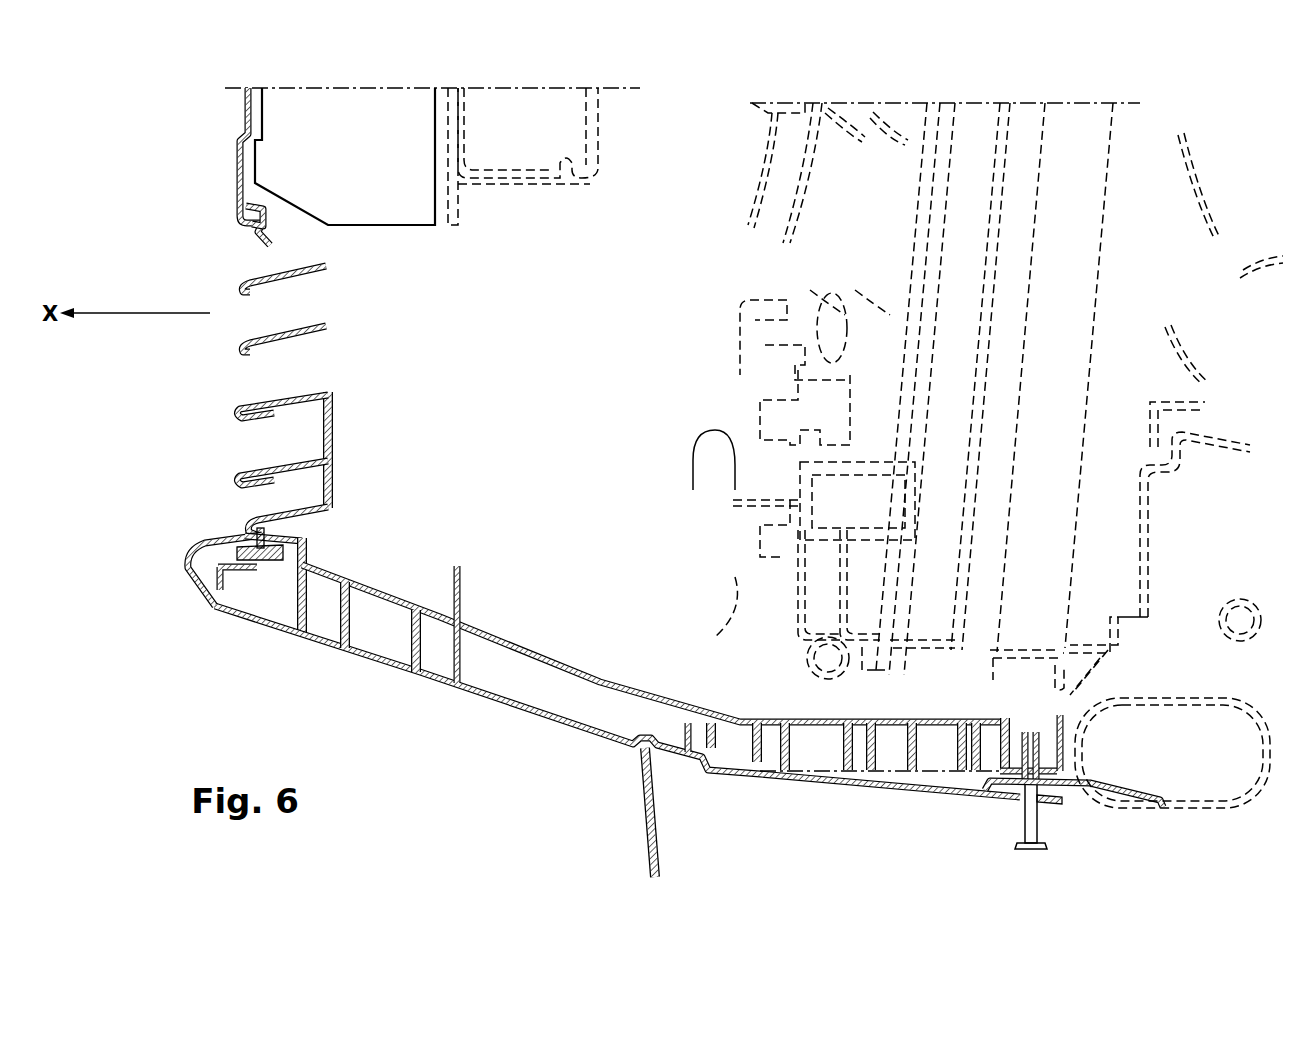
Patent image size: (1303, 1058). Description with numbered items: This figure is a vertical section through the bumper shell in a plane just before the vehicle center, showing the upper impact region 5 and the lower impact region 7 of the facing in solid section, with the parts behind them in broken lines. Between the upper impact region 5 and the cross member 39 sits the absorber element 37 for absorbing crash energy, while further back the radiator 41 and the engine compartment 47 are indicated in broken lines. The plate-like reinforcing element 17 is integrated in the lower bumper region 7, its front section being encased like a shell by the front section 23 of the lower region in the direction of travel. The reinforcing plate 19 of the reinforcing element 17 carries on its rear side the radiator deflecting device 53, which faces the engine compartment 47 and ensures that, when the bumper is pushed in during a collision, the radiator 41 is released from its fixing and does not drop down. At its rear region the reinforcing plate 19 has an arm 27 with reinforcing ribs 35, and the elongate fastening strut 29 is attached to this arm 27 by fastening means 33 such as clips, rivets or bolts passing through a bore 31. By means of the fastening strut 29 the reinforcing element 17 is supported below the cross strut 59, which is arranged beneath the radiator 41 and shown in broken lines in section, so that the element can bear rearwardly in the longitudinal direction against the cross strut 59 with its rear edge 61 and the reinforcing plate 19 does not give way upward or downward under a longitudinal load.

The upper impact region 5 is at (215, 107).
The lower impact region 7 is at (178, 546).
The reinforcing element 17 is at (514, 676).
The reinforcing plate 19 is at (641, 727).
The front section 23 is at (235, 612).
The arm 27 is at (822, 718).
The fastening strut 29 is at (1115, 793).
The bore 31 is at (1017, 782).
The fastening means 33 is at (1022, 850).
The reinforcing ribs 35 is at (935, 760).
The absorber element 37 is at (384, 208).
The cross member 39 is at (507, 183).
The radiator 41 is at (990, 388).
The engine compartment 47 is at (1189, 553).
The radiator deflecting device 53 is at (455, 575).
The cross strut 59 is at (1218, 810).
The rear edge 61 is at (1065, 720).